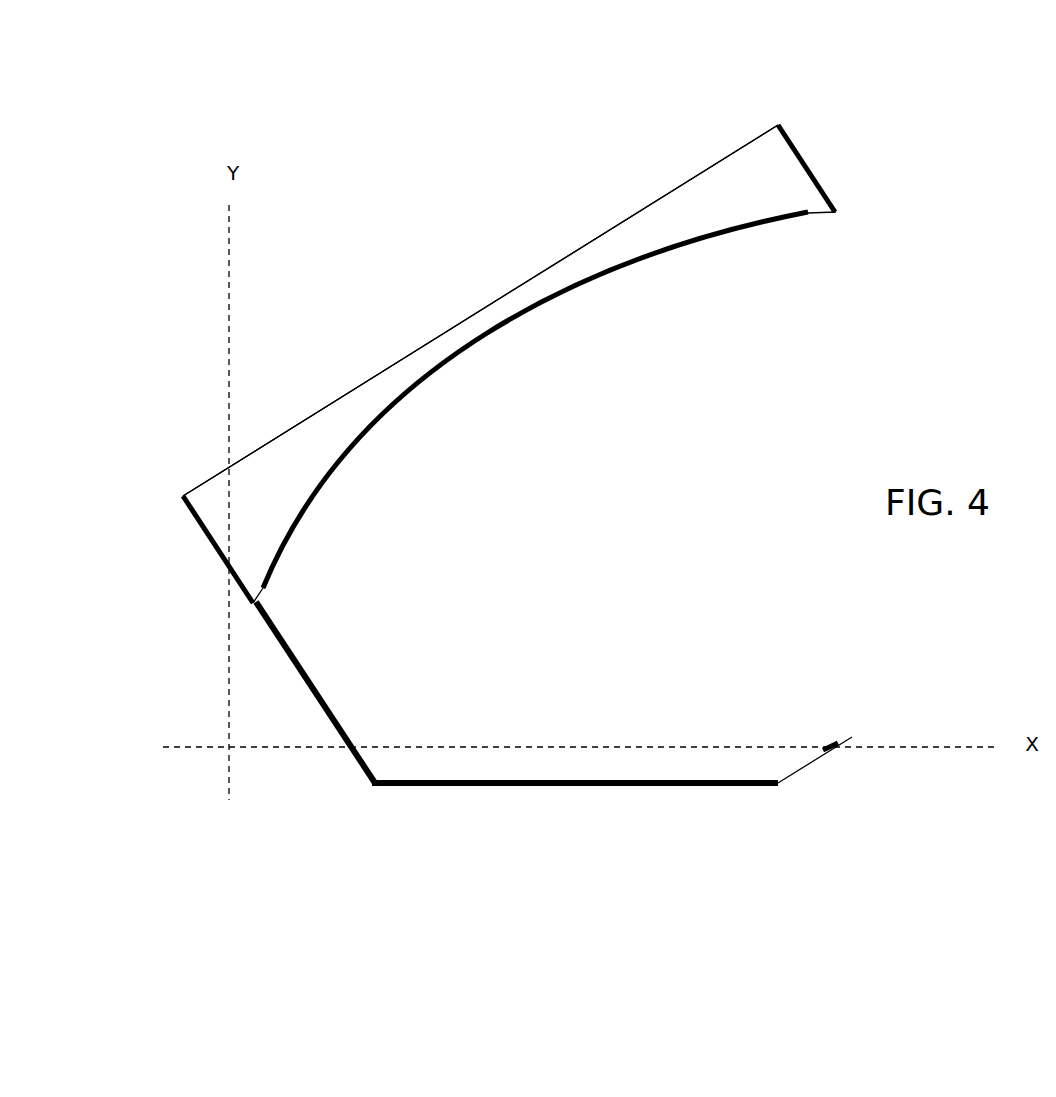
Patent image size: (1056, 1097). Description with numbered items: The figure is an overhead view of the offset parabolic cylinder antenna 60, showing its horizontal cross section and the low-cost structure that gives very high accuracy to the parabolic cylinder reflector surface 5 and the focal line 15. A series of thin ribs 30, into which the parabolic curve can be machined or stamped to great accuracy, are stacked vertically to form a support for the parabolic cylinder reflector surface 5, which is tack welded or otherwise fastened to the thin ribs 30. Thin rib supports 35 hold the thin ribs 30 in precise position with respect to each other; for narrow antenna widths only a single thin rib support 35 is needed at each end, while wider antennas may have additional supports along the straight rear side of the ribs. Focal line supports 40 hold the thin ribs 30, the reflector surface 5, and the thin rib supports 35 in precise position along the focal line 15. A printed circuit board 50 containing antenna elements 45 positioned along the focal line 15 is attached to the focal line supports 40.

The parabolic cylinder reflector surface 5 is at (420, 380).
The focal line 15 is at (837, 750).
The thin ribs 30 is at (700, 172).
The thin rib supports 35 is at (810, 165).
The focal line supports 40 is at (320, 697).
The antenna elements 45 is at (837, 740).
The printed circuit board 50 is at (810, 765).
The offset parabolic cylinder antenna 60 is at (420, 230).